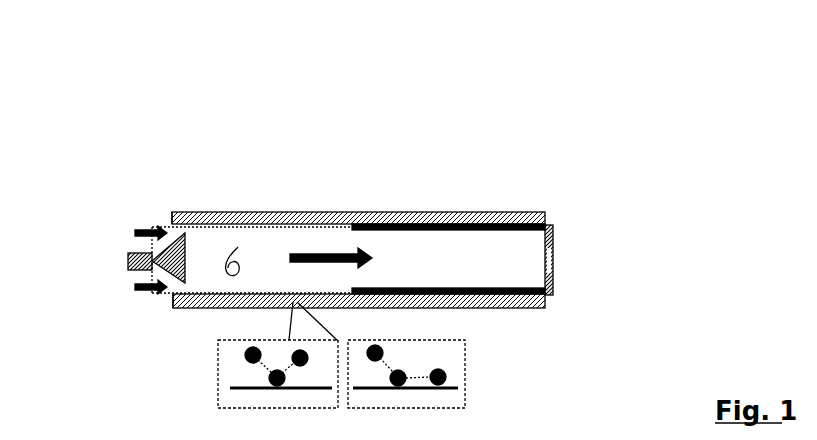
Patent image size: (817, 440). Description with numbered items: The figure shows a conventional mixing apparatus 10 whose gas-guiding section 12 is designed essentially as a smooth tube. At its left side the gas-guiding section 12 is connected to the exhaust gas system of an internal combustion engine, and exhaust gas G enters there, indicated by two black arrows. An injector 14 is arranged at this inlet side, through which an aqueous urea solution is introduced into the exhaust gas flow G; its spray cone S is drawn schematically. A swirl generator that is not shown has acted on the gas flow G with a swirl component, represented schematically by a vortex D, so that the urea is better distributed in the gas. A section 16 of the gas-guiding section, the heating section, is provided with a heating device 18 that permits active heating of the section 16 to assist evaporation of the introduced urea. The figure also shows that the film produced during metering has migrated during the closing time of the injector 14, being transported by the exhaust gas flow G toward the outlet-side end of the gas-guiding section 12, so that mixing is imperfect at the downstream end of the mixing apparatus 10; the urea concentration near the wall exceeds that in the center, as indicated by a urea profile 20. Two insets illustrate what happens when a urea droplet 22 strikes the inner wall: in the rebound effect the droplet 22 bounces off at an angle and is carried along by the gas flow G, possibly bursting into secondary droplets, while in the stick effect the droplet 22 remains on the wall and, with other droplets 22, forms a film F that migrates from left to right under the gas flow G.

The mixing apparatus 10 is at (541, 140).
The gas-guiding section 12 is at (168, 214).
The injector 14 is at (128, 260).
The heating section 16 is at (525, 310).
The heating device 18 is at (529, 211).
The urea profile 20 is at (557, 232).
The urea droplet 22 is at (227, 310).
The exhaust gas flow G is at (143, 222).
The spray cone S is at (199, 235).
The vortex D is at (240, 248).
The film F is at (434, 229).